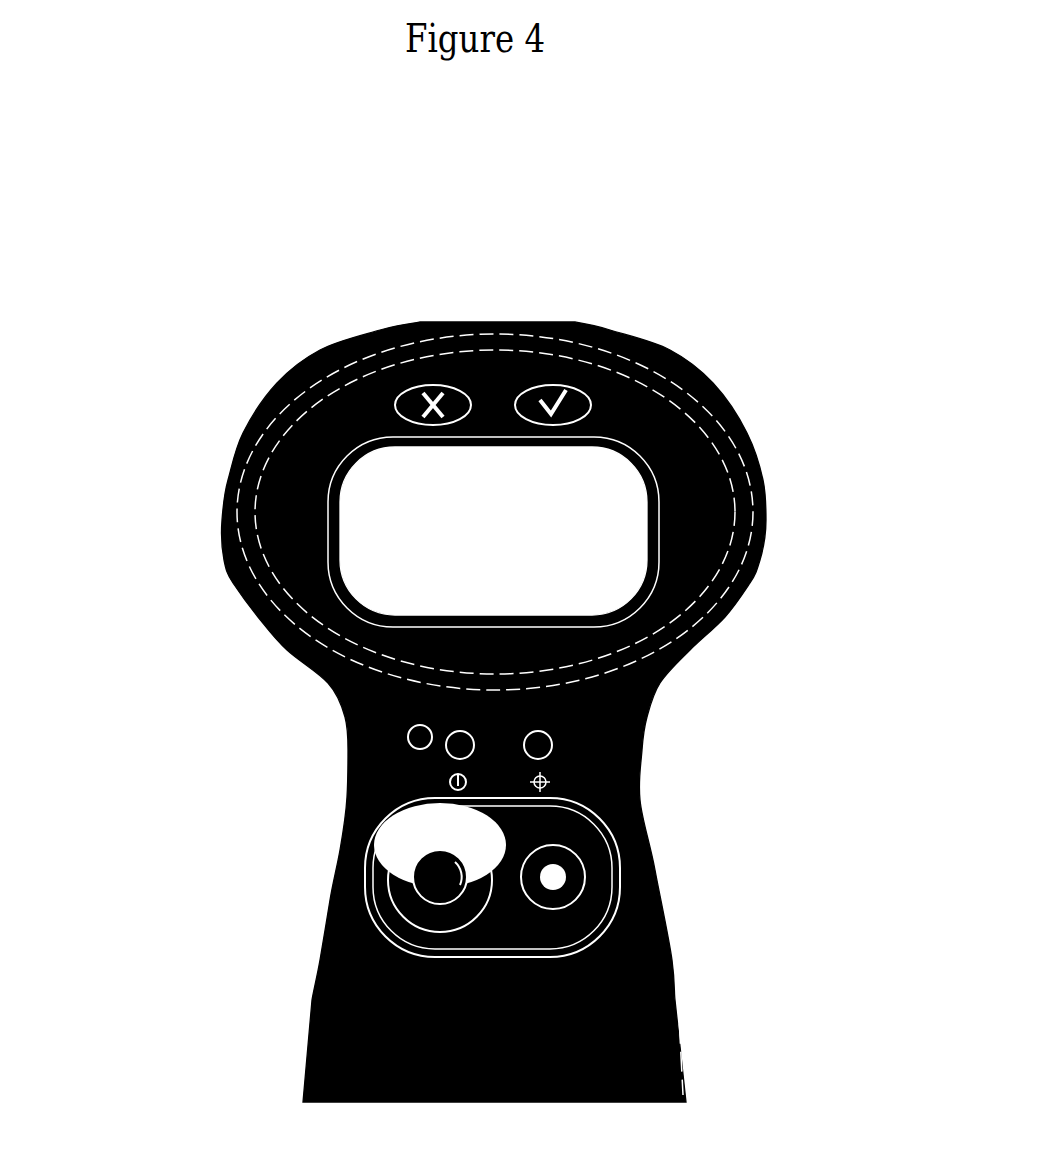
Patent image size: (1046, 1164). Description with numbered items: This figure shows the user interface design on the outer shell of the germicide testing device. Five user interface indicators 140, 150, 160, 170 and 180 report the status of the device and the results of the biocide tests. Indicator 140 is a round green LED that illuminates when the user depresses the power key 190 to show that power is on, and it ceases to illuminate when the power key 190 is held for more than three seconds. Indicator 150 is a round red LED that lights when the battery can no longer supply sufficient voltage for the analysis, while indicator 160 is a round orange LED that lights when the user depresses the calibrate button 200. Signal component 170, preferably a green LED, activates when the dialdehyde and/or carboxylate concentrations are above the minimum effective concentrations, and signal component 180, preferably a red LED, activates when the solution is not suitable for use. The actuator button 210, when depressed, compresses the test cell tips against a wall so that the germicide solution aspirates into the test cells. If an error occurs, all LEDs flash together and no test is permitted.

The user interface indicator 140 is at (452, 750).
The user interface indicator 150 is at (420, 737).
The user interface indicator 160 is at (550, 745).
The signal component 170 is at (575, 410).
The signal component 180 is at (405, 408).
The power key 190 is at (440, 885).
The calibrate button 200 is at (556, 870).
The actuator button 210 is at (497, 533).